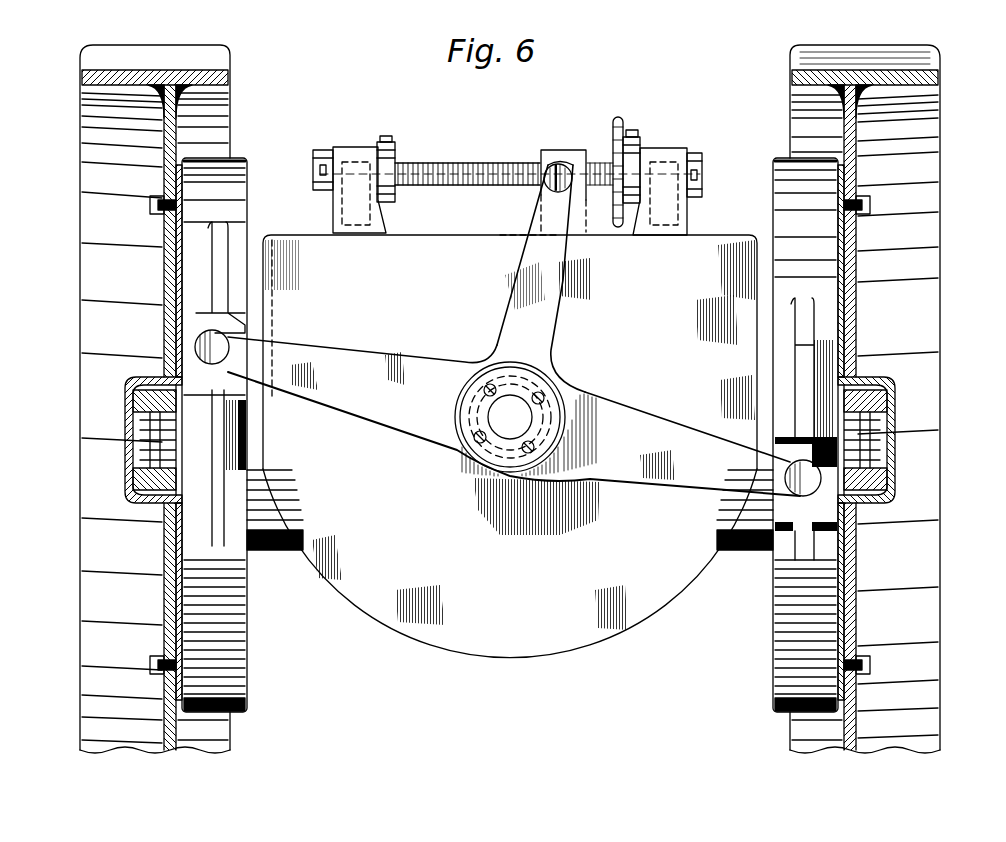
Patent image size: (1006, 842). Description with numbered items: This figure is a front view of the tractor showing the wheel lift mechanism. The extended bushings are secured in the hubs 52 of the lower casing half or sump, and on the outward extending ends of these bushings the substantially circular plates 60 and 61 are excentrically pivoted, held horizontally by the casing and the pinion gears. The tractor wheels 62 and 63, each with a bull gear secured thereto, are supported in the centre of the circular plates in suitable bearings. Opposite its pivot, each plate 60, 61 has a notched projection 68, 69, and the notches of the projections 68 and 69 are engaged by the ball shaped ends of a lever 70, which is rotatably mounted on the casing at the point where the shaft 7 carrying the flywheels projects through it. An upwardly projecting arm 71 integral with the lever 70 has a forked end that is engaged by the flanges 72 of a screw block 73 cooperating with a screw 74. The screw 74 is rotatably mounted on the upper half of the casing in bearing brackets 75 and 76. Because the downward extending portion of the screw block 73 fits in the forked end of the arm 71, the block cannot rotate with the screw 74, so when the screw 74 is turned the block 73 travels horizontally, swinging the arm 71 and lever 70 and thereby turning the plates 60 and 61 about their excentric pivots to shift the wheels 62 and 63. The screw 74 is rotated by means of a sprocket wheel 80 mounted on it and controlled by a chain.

The shaft 7 is at (503, 388).
The hubs 52 is at (280, 546).
The circular plate 60 is at (773, 660).
The circular plate 61 is at (238, 670).
The tractor wheel 62 is at (932, 170).
The tractor wheel 63 is at (80, 186).
The notched projection 68 is at (793, 527).
The notched projection 69 is at (255, 378).
The lever 70 is at (405, 430).
The upwardly projecting arm 71 is at (555, 320).
The flanges 72 is at (583, 150).
The screw block 73 is at (542, 197).
The screw 74 is at (460, 162).
The bearing bracket 75 is at (333, 218).
The bearing bracket 76 is at (688, 216).
The sprocket wheel 80 is at (622, 124).